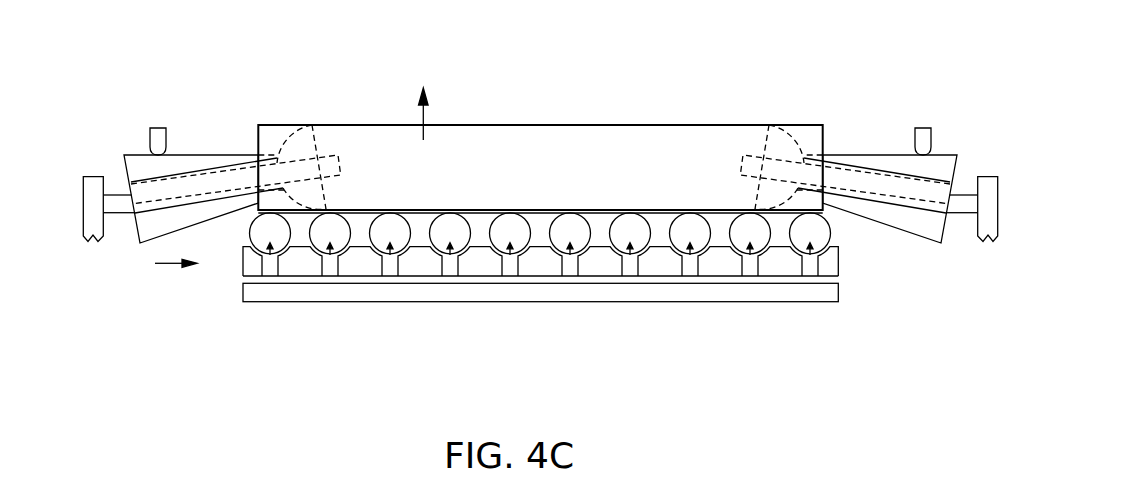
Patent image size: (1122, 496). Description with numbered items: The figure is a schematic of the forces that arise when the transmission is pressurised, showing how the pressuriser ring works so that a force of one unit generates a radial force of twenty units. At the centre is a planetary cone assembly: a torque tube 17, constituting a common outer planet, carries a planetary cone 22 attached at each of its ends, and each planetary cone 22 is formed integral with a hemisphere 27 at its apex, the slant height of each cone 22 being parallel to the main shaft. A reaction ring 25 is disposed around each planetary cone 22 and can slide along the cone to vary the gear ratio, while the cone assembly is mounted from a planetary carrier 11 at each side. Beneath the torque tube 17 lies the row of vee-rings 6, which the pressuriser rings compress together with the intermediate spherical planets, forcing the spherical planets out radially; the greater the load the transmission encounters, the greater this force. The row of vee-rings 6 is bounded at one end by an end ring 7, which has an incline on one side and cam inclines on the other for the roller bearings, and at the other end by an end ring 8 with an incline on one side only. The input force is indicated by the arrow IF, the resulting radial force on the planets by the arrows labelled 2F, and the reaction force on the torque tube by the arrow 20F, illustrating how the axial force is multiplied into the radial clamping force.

The roller 2F is at (540, 234).
The vee-ring 6 is at (358, 265).
The end ring 7 is at (254, 265).
The end ring 8 is at (831, 265).
The planetary carrier 11 is at (93, 183).
The torque tube 17 is at (604, 147).
The direction 20F is at (427, 117).
The planetary cone 22 is at (212, 160).
The reaction ring 25 is at (160, 138).
The hemisphere 27 is at (302, 145).
The feed direction IF is at (186, 264).